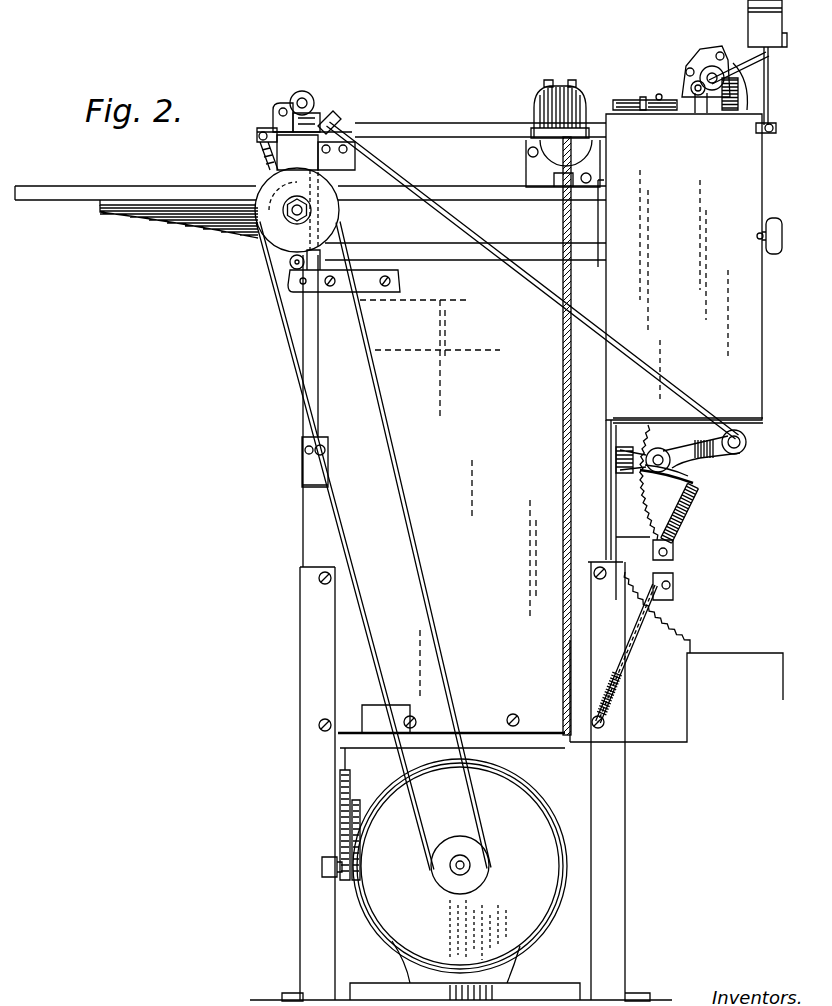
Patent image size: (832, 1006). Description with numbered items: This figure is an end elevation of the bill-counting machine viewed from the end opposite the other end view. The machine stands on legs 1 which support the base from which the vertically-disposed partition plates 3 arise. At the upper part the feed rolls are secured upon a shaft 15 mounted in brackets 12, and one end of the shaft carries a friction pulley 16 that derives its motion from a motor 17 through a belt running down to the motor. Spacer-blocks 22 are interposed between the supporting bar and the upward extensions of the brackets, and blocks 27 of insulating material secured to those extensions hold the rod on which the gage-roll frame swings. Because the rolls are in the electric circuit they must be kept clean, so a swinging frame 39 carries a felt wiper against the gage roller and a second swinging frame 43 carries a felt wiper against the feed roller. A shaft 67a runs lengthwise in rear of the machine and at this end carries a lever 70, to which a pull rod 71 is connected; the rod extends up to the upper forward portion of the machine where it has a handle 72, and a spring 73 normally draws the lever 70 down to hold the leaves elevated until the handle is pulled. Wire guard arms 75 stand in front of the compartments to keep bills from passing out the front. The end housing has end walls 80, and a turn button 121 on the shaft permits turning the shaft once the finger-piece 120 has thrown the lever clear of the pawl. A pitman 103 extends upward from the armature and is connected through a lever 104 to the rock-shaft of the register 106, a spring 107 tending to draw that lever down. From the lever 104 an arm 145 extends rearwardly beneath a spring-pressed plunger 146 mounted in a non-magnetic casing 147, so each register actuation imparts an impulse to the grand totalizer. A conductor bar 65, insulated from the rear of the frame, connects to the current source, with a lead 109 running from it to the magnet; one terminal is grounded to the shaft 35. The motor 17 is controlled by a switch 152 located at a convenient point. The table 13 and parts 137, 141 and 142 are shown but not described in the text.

The legs 1 is at (300, 655).
The partition plates 3 is at (462, 435).
The brackets 12 is at (228, 218).
The table 13 is at (78, 192).
The shaft 15 is at (294, 217).
The friction pulley 16 is at (335, 212).
The motor 17 is at (460, 866).
The spacer-blocks 22 is at (284, 170).
The blocks 27 is at (347, 165).
The shaft 35 is at (280, 108).
The swinging frame 39 is at (258, 145).
The swinging frame 43 is at (290, 262).
The conductor bar 65 is at (672, 580).
The shaft 67a is at (690, 470).
The lever 70 is at (737, 450).
The pull rod 71 is at (512, 270).
The handle 72 is at (303, 91).
The spring 73 is at (684, 521).
The wire guard arms 75 is at (306, 333).
The end walls 80 is at (680, 268).
The second pitman 103 is at (704, 113).
The lever 104 is at (690, 72).
The register 106 is at (700, 60).
The spring 107 is at (730, 110).
The lead 109 is at (669, 567).
The finger-piece 120 is at (641, 110).
The turn button 121 is at (760, 238).
The stud 137 is at (652, 100).
The slide 141 is at (674, 110).
The rack bar 142 is at (618, 102).
The arm 145 is at (742, 62).
The spring-pressed plunger 146 is at (768, 58).
The non-magnetic casing 147 is at (752, 22).
The switch 152 is at (545, 128).